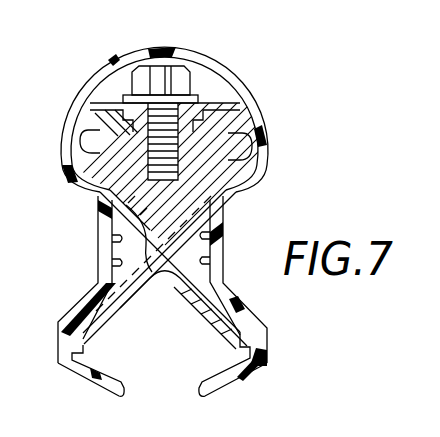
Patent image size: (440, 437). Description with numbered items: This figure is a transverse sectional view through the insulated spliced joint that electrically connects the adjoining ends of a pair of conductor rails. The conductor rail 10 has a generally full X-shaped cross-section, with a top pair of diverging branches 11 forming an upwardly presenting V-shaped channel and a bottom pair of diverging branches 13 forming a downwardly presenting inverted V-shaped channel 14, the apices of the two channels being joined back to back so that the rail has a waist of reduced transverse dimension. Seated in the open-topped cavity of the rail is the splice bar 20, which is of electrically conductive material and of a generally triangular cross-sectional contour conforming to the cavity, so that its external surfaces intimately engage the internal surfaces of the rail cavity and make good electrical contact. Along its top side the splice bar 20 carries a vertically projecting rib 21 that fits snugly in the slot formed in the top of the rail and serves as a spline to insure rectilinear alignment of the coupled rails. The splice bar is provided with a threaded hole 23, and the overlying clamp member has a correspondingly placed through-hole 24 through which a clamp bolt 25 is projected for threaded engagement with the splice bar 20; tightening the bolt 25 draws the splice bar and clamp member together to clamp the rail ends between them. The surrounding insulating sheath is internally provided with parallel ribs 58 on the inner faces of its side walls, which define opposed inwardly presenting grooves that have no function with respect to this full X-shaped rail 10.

The conductor rail 10 is at (165, 240).
The top pair of diverging branches 11 is at (208, 170).
The bottom pair of diverging branches 13 is at (92, 310).
The inverted V-shaped channel 14 is at (123, 297).
The splice bar 20 is at (262, 136).
The vertically projecting rib 21 is at (218, 97).
The threaded holes 23 is at (148, 150).
The through-holes 24 is at (95, 107).
The clamp bolts 25 is at (177, 84).
The parallel ribs 58 is at (118, 262).